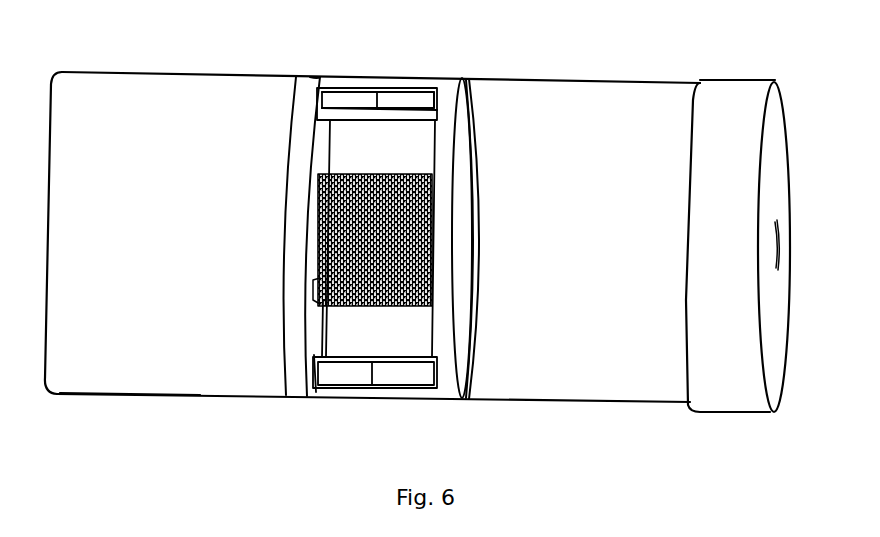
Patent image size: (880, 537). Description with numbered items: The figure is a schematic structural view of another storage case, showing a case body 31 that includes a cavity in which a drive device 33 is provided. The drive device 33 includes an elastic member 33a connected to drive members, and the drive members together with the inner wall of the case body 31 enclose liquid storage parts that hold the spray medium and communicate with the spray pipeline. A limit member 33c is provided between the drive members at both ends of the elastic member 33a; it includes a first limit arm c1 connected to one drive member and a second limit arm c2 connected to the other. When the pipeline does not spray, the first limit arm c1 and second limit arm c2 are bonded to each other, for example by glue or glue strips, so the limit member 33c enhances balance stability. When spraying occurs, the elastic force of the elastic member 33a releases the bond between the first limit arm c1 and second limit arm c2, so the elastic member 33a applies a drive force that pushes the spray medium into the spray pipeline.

The case body 31 is at (152, 60).
The drive device 33 is at (350, 233).
The elastic member 33a is at (318, 304).
The limit member 33c is at (377, 65).
The first limit arm c1 is at (360, 90).
The second limit arm c2 is at (415, 90).